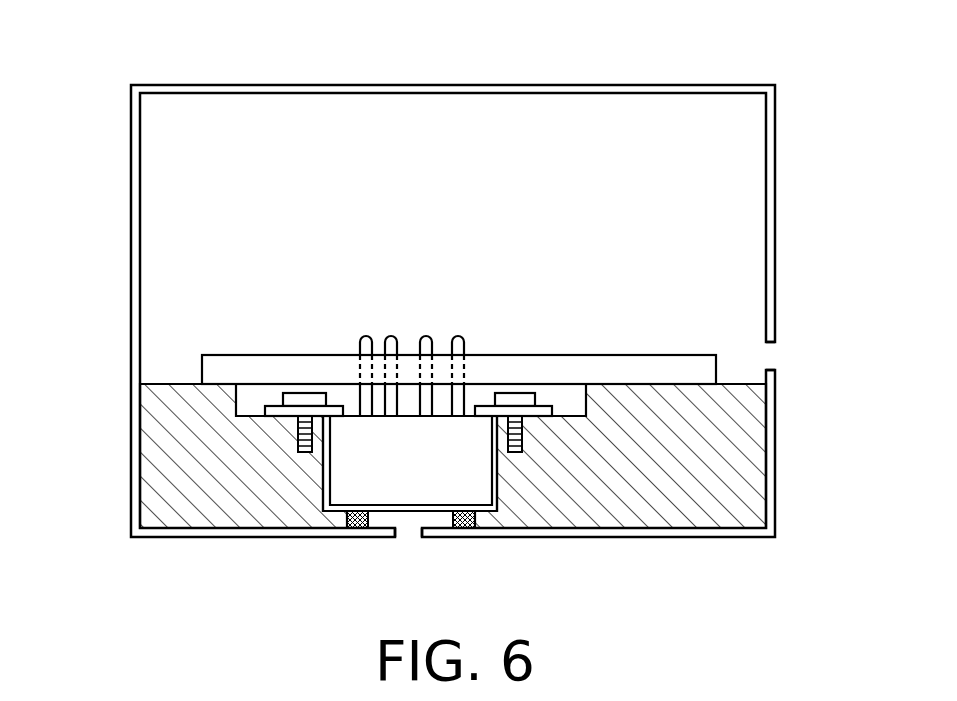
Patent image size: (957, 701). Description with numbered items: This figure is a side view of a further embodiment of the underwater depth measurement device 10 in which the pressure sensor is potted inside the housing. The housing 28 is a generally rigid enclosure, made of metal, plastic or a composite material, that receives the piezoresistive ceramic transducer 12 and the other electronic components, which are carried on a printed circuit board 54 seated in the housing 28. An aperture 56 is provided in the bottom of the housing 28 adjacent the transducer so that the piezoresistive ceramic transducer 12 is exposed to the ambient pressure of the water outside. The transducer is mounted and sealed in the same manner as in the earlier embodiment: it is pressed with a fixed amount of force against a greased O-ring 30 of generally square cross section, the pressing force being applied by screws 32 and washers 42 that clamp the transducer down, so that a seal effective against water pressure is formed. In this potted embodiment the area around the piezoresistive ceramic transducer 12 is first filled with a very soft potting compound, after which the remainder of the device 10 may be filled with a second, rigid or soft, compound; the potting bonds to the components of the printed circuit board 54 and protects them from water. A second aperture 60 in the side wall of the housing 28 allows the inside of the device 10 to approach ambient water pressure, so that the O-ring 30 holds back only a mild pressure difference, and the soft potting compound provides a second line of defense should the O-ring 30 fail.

The underwater depth measurement device 10 is at (323, 57).
The piezoresistive ceramic transducer 12 is at (382, 308).
The housing 28 is at (185, 458).
The O-ring 30 is at (352, 522).
The screws 32 is at (517, 400).
The washers 42 is at (542, 410).
The printed circuit board 54 is at (227, 370).
The aperture 56 is at (408, 532).
The aperture 60 is at (771, 358).